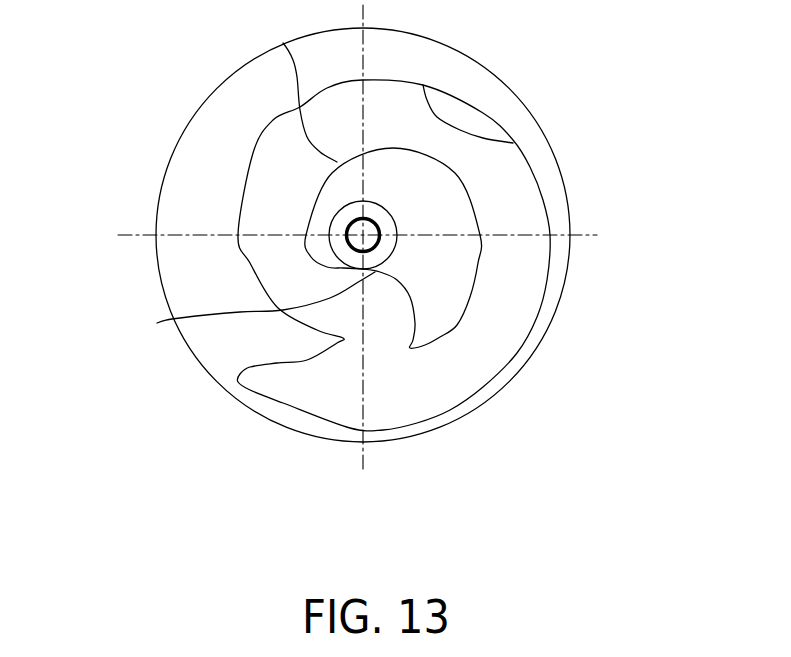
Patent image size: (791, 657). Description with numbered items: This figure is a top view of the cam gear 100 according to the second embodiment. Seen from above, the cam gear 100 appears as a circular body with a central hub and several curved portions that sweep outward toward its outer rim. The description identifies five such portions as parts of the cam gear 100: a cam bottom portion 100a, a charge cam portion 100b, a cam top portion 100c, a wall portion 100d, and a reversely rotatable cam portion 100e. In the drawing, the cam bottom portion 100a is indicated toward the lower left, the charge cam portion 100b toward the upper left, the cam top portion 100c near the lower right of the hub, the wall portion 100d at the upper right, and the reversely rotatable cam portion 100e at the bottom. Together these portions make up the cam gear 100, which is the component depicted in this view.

The cam gear 100 is at (133, 118).
The cam bottom portion 100a is at (157, 323).
The charge cam portion 100b is at (283, 43).
The cam top portion 100c is at (457, 325).
The wall portion 100d is at (513, 143).
The reversely rotatable cam portion 100e is at (307, 360).